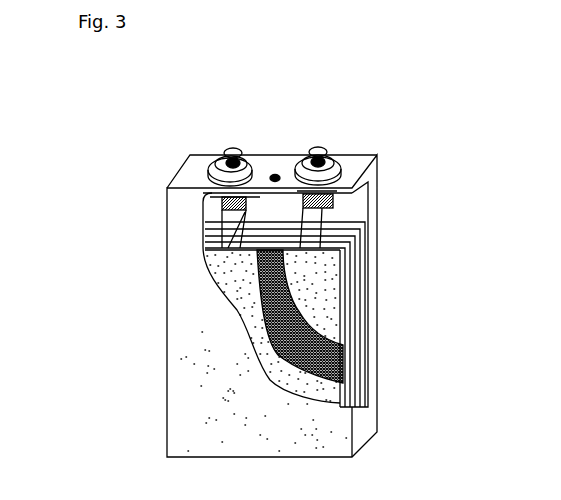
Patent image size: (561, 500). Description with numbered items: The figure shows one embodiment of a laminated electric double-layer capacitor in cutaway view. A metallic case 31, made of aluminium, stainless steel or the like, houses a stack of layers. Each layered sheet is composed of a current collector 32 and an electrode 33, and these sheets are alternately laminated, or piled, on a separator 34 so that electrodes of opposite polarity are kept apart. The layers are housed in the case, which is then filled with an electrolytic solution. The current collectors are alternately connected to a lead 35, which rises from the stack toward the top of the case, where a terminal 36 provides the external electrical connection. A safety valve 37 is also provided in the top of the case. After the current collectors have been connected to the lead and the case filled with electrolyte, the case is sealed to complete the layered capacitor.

The metallic case 31 is at (200, 372).
The current collector 32 is at (366, 357).
The electrode 33 is at (368, 318).
The separator 34 is at (312, 272).
The lead 35 is at (198, 231).
The terminal 36 is at (212, 150).
The safety valve 37 is at (275, 168).